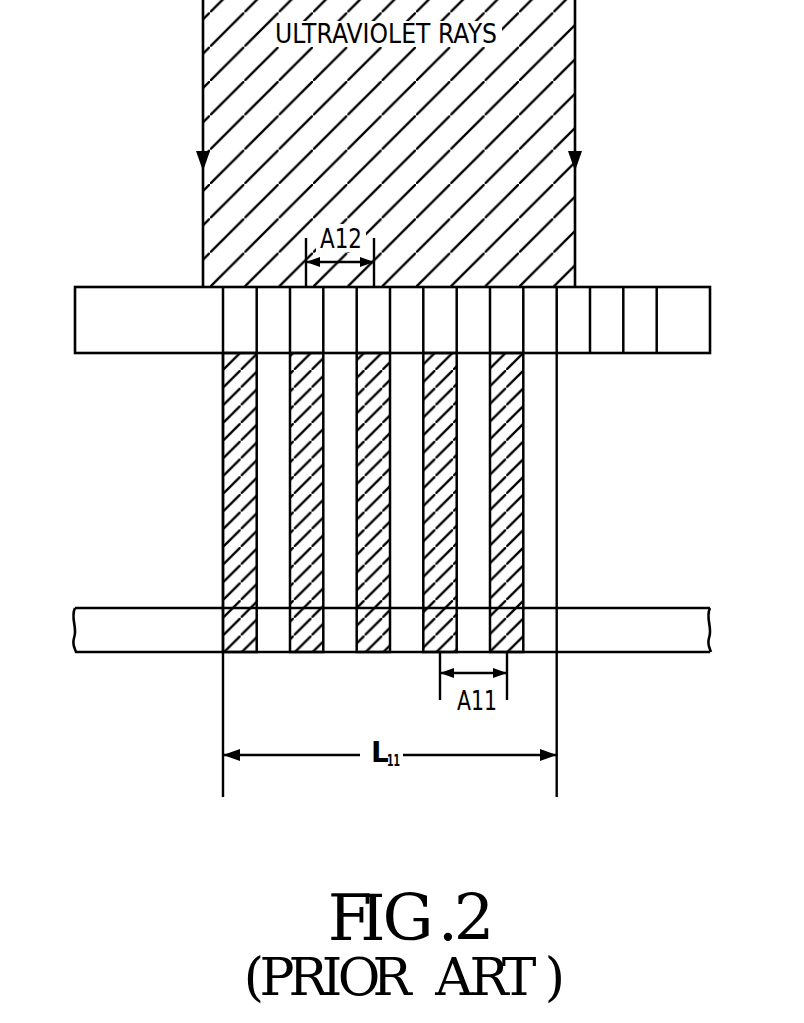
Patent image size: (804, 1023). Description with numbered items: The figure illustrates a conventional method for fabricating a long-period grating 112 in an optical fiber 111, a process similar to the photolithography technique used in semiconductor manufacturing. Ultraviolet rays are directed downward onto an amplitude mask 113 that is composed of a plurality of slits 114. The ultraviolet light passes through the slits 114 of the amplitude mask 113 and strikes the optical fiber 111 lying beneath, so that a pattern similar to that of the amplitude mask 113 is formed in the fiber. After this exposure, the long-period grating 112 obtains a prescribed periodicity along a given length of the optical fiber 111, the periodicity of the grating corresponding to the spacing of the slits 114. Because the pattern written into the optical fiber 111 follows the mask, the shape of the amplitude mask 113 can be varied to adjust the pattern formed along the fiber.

The optical fiber 111 is at (145, 645).
The long-period grating 112 is at (543, 605).
The amplitude mask 113 is at (137, 342).
The slits 114 is at (572, 342).